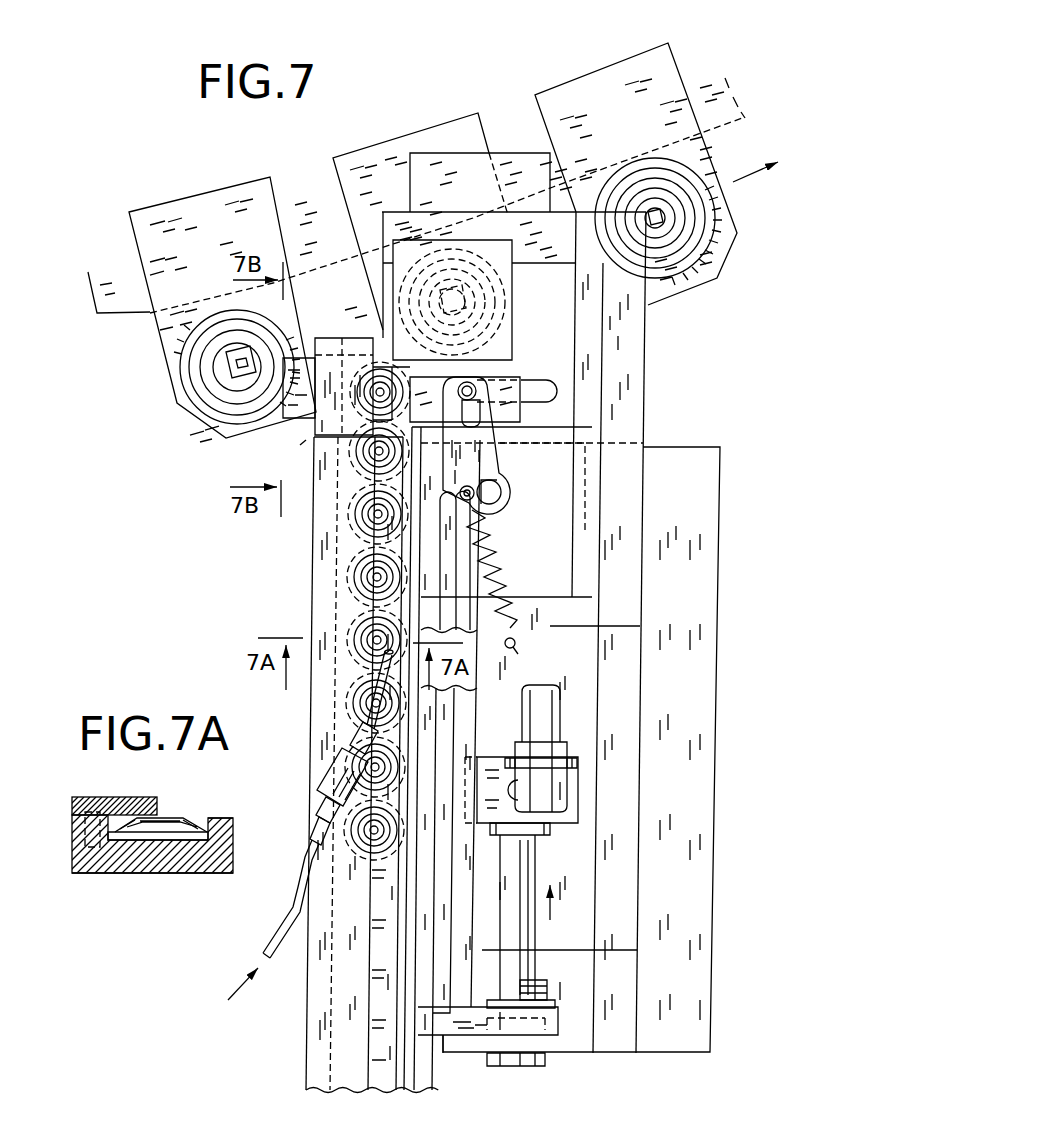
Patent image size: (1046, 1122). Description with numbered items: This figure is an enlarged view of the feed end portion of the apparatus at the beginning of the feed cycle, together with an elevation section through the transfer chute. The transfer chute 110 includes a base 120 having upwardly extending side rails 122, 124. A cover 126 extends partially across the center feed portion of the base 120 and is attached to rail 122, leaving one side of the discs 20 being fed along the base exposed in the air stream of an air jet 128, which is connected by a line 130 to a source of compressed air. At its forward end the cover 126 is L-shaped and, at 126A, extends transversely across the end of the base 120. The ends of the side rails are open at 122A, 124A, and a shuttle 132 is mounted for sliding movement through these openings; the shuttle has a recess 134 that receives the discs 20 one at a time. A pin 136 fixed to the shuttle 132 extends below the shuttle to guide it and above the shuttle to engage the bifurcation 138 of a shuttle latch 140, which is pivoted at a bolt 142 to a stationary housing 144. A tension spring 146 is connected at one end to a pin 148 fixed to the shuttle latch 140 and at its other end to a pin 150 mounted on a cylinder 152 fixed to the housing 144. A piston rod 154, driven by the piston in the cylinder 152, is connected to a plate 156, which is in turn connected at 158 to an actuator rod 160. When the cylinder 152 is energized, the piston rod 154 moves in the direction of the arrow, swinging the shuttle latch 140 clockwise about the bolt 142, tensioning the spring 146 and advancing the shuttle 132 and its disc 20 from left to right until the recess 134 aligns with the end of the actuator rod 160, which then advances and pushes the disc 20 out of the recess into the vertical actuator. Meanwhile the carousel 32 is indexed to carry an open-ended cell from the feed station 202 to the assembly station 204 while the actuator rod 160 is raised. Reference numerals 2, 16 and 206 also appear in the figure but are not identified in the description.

In FIG. 7, the electronic component 2 is at (212, 367).
In FIG. 7, the component contact 16 is at (232, 372).
In FIG. 7, the disc 20 is at (372, 560).
In FIG. 7A, the disc 20 is at (187, 810).
In FIG. 7, the carousel 32 is at (753, 113).
In FIG. 7, the transfer chute 110 is at (300, 618).
In FIG. 7A, the transfer chute 110 is at (63, 873).
In FIG. 7A, the base 120 is at (152, 873).
In FIG. 7, the side rail 122 is at (334, 746).
In FIG. 7A, the side rail 122 is at (78, 827).
In FIG. 7, the opening in side rail 122A is at (310, 443).
In FIG. 7, the side rail 124 is at (407, 1050).
In FIG. 7A, the side rail 124 is at (228, 833).
In FIG. 7, the opening in side rail 124A is at (500, 430).
In FIG. 7, the cover 126 is at (325, 597).
In FIG. 7A, the cover 126 is at (110, 798).
In FIG. 7, the transverse end portion of cover 126A is at (347, 345).
In FIG. 7, the air jet 128 is at (388, 655).
In FIG. 7, the line 130 is at (283, 927).
In FIG. 7, the shuttle 132 is at (556, 374).
In FIG. 7, the recess 134 is at (317, 427).
In FIG. 7, the pin 136 is at (476, 386).
In FIG. 7, the bifurcation 138 is at (443, 430).
In FIG. 7, the shuttle latch 140 is at (500, 497).
In FIG. 7, the bolt 142 is at (505, 493).
In FIG. 7, the stationary housing 144 is at (555, 485).
In FIG. 7, the tension spring 146 is at (497, 560).
In FIG. 7, the pin 148 is at (500, 477).
In FIG. 7, the pin 150 is at (515, 648).
In FIG. 7, the cylinder 152 is at (550, 627).
In FIG. 7, the piston rod 154 is at (527, 952).
In FIG. 7, the plate 156 is at (538, 1027).
In FIG. 7, the connection 158 is at (442, 995).
In FIG. 7, the actuator rod 160 is at (462, 857).
In FIG. 7, the feed station 202 is at (226, 182).
In FIG. 7, the assembly station 204 is at (399, 130).
In FIG. 7, the plate 206 is at (594, 63).